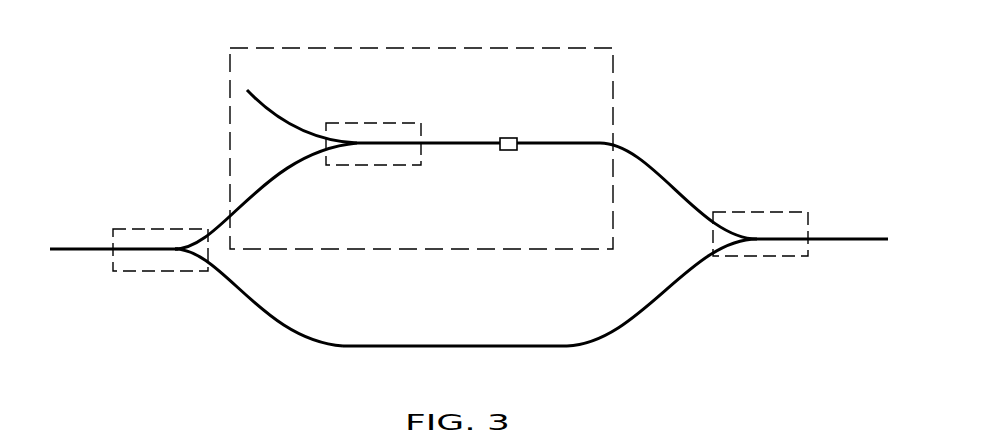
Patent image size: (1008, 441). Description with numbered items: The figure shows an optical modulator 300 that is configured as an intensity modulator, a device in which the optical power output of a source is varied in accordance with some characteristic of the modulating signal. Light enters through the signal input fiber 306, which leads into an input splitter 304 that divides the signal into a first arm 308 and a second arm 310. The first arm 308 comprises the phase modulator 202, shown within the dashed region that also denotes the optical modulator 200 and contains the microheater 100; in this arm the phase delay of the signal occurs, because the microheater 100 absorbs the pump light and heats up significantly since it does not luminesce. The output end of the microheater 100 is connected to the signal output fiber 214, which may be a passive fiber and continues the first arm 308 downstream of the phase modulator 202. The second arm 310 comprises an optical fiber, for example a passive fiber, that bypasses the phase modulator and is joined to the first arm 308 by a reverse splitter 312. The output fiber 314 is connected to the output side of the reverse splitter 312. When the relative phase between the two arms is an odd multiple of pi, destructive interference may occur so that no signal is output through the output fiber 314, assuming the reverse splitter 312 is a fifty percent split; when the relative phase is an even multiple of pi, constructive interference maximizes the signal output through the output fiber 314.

The microheater 100 is at (510, 150).
The optical modulator 200 is at (310, 48).
The phase modulator 202 is at (421, 148).
The signal output fiber 214 is at (558, 142).
The optical modulator 300 is at (270, 334).
The input splitter 304 is at (147, 273).
The signal input fiber 306 is at (83, 254).
The first arm 308 is at (222, 222).
The second arm 310 is at (538, 347).
The reverse splitter 312 is at (773, 212).
The output fiber 314 is at (853, 242).